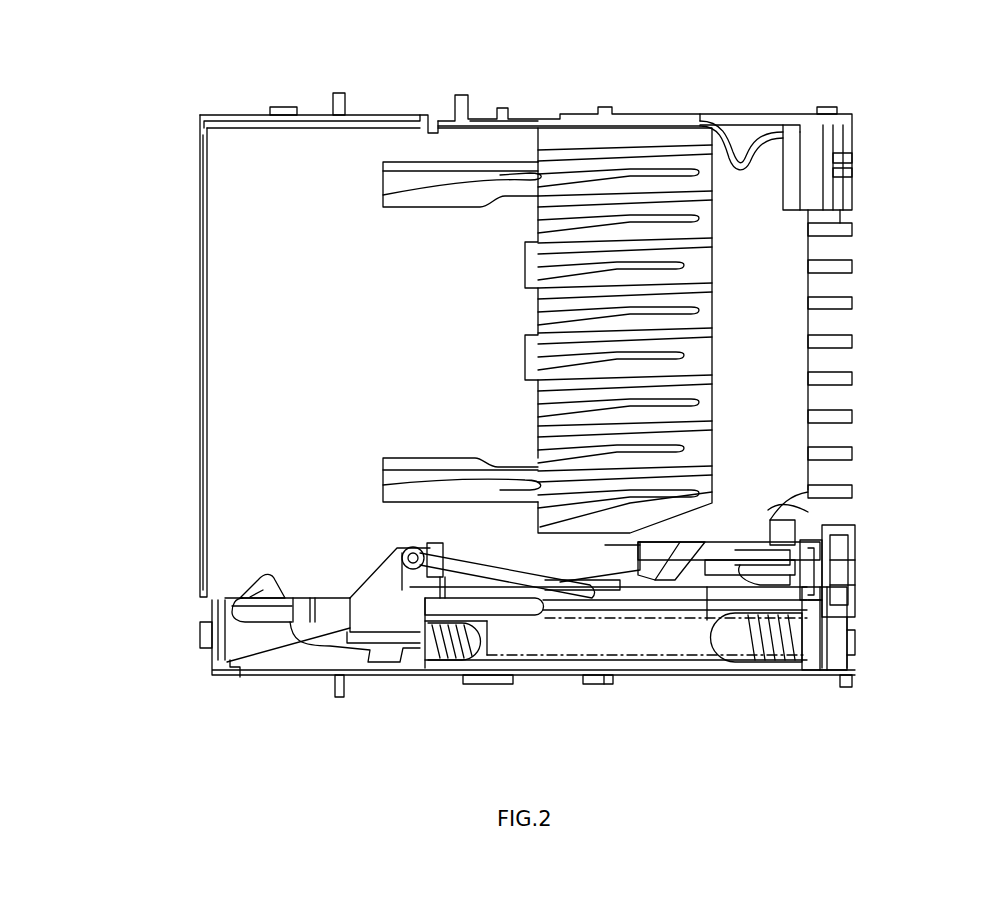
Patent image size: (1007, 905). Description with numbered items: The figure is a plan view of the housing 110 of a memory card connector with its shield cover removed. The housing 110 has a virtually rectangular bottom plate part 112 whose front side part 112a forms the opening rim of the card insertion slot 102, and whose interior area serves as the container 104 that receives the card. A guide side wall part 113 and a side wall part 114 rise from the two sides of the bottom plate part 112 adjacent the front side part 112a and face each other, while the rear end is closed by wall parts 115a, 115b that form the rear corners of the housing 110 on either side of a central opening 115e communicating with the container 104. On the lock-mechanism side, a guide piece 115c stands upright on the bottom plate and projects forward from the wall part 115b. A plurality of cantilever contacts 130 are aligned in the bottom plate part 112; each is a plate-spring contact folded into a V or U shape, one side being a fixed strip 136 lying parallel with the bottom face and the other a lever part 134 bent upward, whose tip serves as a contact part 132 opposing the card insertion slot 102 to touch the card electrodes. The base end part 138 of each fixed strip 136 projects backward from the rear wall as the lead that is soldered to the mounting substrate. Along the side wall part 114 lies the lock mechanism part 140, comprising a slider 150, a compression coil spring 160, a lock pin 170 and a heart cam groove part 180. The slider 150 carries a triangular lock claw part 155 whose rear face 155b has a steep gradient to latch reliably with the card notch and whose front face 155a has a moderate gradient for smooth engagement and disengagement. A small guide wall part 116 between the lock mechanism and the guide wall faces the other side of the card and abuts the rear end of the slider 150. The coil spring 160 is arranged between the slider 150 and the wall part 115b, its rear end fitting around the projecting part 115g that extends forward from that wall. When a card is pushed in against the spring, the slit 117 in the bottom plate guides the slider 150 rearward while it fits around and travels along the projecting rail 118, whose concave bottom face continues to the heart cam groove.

The card insertion slot 102 is at (218, 128).
The container 104 is at (478, 150).
The housing 110 is at (243, 110).
The bottom plate part 112 is at (350, 155).
The front side part 112a is at (200, 346).
The guide side wall part 113 is at (300, 118).
The side wall part 114 is at (625, 678).
The wall part 115a is at (810, 165).
The wall part 115b is at (828, 678).
The guide piece 115c is at (740, 520).
The opening 115e is at (838, 228).
The projecting part 115g is at (760, 678).
The small guide wall part 116 is at (700, 560).
The slit 117 is at (515, 605).
The projecting rail 118 is at (572, 580).
The contacts 130 is at (697, 300).
The contact parts 132 is at (560, 350).
The lever part 134 is at (555, 383).
The fixed strip 136 is at (550, 308).
The base end part 138 is at (835, 340).
The lock mechanism part 140 is at (870, 525).
The slider 150 is at (360, 660).
The lock claw part 155 is at (215, 608).
The face facing the front end 155a is at (268, 600).
The face facing the rear end 155b is at (278, 590).
The coil spring 160 is at (740, 655).
The lock pin 170 is at (470, 662).
The heart cam groove part 180 is at (822, 528).